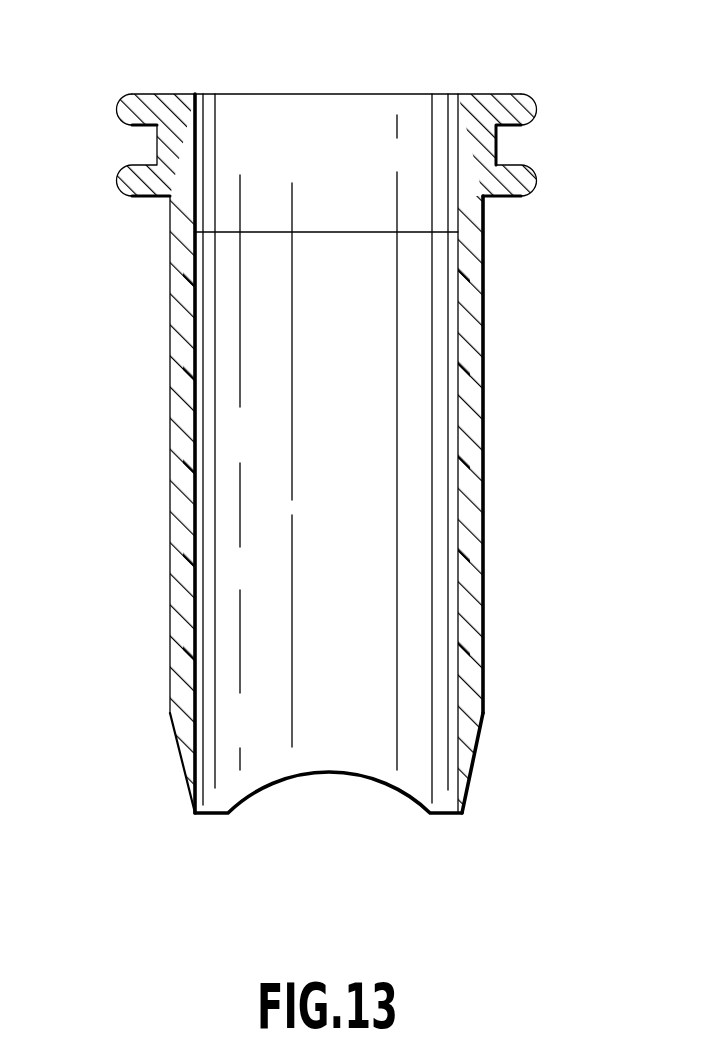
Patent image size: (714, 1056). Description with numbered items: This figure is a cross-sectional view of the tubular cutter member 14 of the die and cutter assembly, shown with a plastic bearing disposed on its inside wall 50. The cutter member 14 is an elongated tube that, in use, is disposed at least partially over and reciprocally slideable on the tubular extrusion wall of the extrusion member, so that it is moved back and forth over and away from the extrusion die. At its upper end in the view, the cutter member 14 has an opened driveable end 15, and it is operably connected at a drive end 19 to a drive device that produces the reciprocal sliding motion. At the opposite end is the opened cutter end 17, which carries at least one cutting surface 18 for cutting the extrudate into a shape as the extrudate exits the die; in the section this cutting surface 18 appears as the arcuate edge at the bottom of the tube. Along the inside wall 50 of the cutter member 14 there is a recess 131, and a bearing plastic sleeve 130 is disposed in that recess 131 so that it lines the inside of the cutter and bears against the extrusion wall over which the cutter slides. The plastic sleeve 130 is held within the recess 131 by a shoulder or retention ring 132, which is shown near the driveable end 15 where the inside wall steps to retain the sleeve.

The tubular cutter member 14 is at (485, 416).
The opened driveable end 15 is at (498, 93).
The drive end 19 is at (158, 146).
The retention ring 132 is at (197, 166).
The bearing plastic sleeve 130 is at (197, 456).
The recess 131 is at (197, 579).
The inside wall 50 is at (198, 746).
The cutting surface 18 is at (317, 774).
The opened cutter end 17 is at (478, 742).